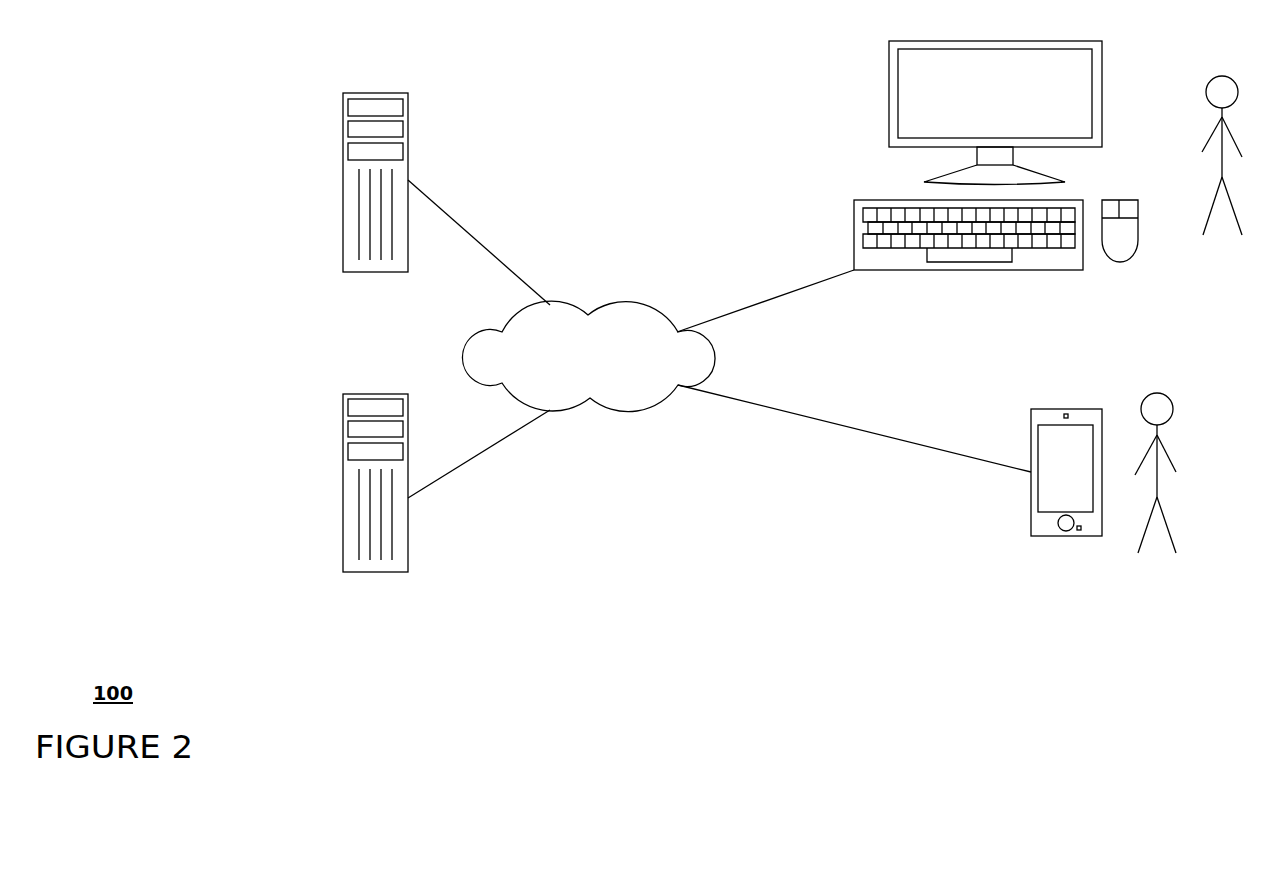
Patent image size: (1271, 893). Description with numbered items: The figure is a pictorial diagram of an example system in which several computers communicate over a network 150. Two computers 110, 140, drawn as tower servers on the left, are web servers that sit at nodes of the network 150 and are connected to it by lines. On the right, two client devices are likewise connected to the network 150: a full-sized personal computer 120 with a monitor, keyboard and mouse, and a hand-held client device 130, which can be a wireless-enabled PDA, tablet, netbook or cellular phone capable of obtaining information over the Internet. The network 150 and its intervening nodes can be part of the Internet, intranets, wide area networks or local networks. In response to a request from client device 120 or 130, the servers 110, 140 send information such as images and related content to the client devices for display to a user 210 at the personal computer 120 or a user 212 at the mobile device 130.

The computer 110 is at (343, 178).
The computer 120 is at (889, 128).
The computer 130 is at (1031, 519).
The computer 140 is at (343, 478).
The network 150 is at (502, 325).
The user 210 is at (1222, 168).
The user 212 is at (1157, 478).